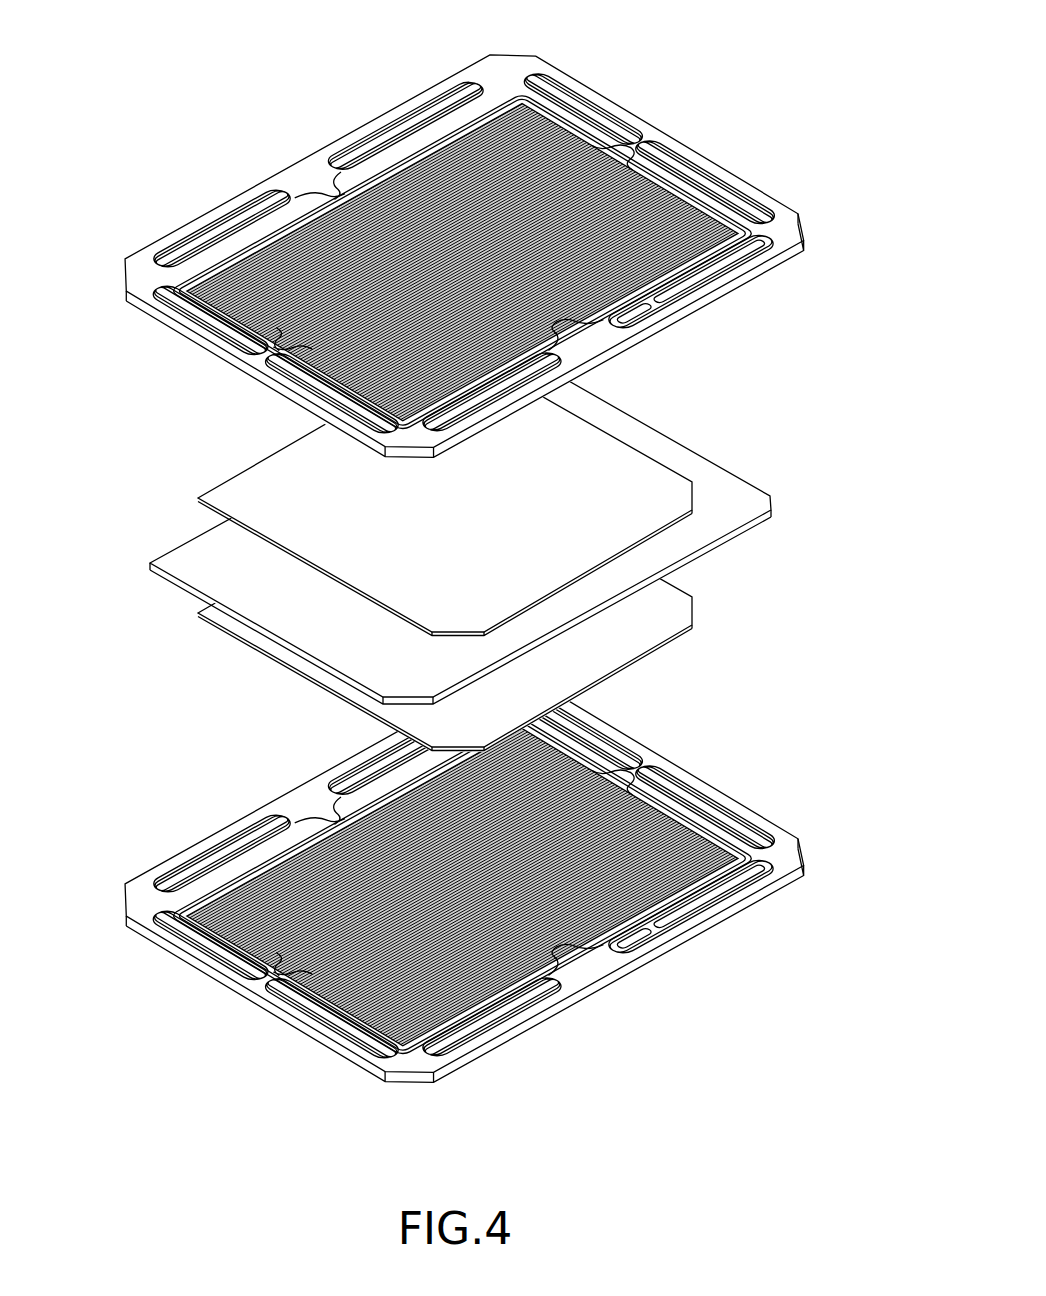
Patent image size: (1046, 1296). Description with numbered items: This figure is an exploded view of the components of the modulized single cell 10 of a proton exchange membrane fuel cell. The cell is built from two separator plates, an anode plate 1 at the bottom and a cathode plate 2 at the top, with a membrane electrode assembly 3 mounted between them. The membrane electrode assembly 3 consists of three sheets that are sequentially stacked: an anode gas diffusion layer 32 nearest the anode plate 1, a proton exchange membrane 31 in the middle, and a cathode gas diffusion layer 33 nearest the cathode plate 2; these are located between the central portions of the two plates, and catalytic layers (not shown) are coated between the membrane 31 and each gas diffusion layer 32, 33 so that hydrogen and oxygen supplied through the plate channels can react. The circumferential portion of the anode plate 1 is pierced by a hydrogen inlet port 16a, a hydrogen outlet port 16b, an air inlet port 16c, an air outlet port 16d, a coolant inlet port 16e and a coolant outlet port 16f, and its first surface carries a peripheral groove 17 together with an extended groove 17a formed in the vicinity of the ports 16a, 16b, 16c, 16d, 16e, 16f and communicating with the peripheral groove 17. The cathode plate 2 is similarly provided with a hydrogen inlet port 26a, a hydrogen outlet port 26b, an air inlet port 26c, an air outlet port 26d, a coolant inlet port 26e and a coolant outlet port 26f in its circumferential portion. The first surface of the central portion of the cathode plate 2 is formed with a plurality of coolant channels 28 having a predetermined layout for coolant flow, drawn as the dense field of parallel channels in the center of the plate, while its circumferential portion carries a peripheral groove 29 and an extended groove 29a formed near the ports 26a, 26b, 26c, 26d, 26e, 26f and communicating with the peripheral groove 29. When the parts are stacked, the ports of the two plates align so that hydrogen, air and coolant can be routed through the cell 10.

The anode plate 1 is at (808, 846).
The cathode plate 2 is at (810, 230).
The membrane electrode assembly 3 is at (856, 457).
The modulized single cell 10 is at (78, 285).
The hydrogen inlet port 16a is at (709, 896).
The hydrogen outlet port 16b is at (222, 854).
The air inlet port 16c is at (649, 773).
The air outlet port 16d is at (275, 984).
The coolant inlet port 16e is at (492, 1017).
The coolant outlet port 16f is at (406, 751).
The peripheral groove 17 is at (691, 906).
The extended groove 17a is at (634, 938).
The hydrogen inlet port 26a is at (709, 271).
The hydrogen outlet port 26b is at (222, 229).
The air inlet port 26c is at (649, 148).
The air outlet port 26d is at (275, 359).
The coolant inlet port 26e is at (492, 392).
The coolant outlet port 26f is at (406, 126).
The coolant channels 28 is at (458, 253).
The peripheral groove 29 is at (691, 281).
The extended groove 29a is at (634, 313).
The proton exchange membrane 31 is at (747, 492).
The anode gas diffusion layer 32 is at (680, 613).
The cathode gas diffusion layer 33 is at (680, 495).